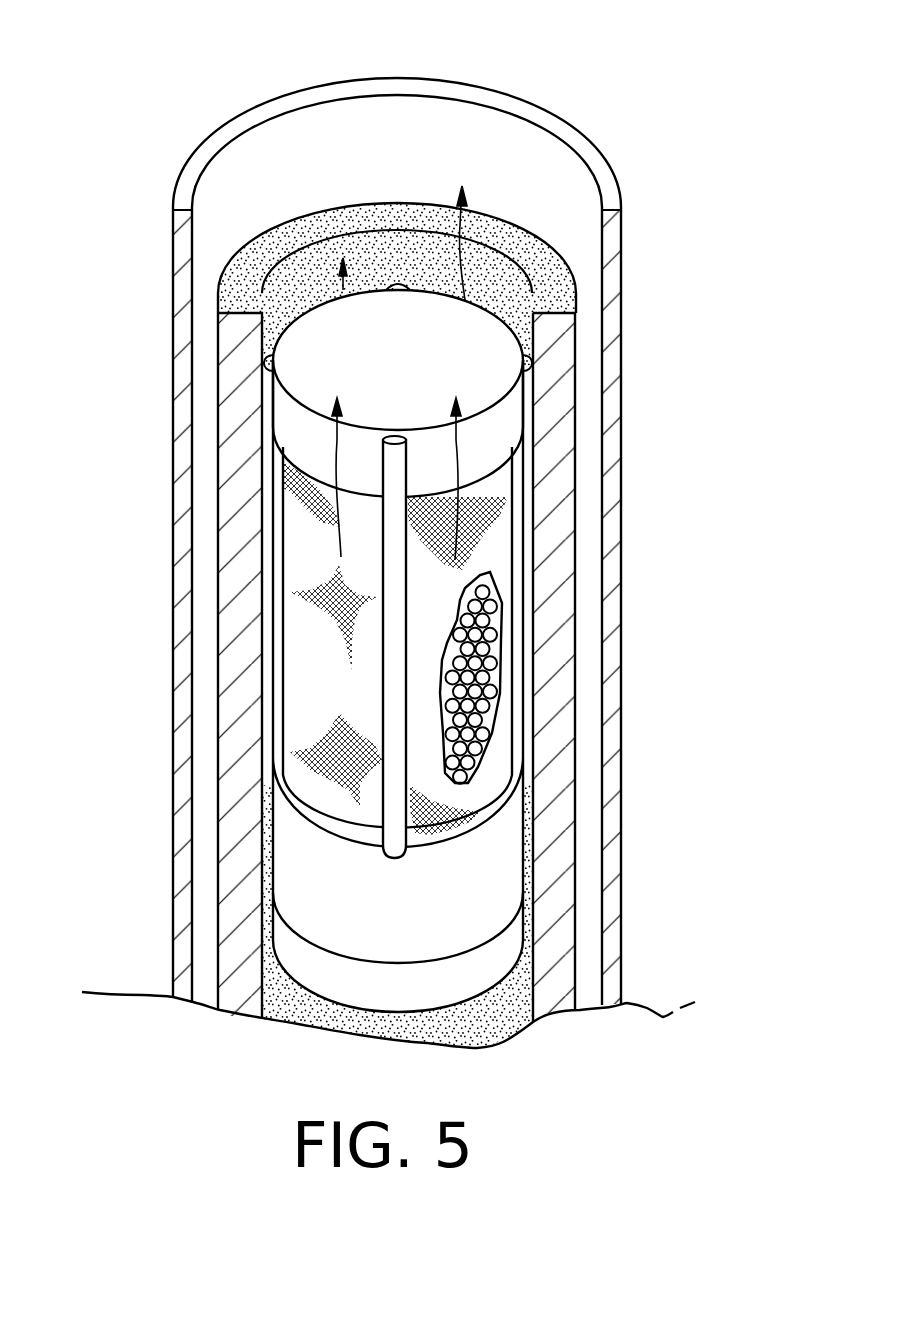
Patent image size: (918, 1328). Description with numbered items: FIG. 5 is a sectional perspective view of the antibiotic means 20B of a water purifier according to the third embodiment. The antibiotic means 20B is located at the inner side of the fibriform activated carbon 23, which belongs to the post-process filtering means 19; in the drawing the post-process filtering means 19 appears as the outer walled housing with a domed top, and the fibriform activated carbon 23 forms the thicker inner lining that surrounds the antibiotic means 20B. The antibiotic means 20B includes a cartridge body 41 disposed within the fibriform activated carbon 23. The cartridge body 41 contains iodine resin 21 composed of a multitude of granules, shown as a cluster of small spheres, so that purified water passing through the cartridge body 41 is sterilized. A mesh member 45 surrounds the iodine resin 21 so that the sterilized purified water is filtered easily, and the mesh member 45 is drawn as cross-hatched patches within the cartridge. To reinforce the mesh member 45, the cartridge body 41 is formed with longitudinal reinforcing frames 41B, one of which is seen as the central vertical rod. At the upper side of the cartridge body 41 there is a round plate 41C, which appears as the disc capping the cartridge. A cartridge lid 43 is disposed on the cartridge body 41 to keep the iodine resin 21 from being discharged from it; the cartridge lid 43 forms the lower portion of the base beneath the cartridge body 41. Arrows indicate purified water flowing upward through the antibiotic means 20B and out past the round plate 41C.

The post-process filtering means 19 is at (613, 459).
The fibriform activated carbon 23 is at (567, 543).
The round plate 41C is at (480, 365).
The longitudinal reinforcing frames 41B is at (400, 596).
The cartridge body 41 is at (480, 863).
The cartridge lid 43 is at (507, 945).
The iodine resin 21 is at (478, 718).
The mesh member 45 is at (298, 741).
The antibiotic means 20B is at (421, 280).